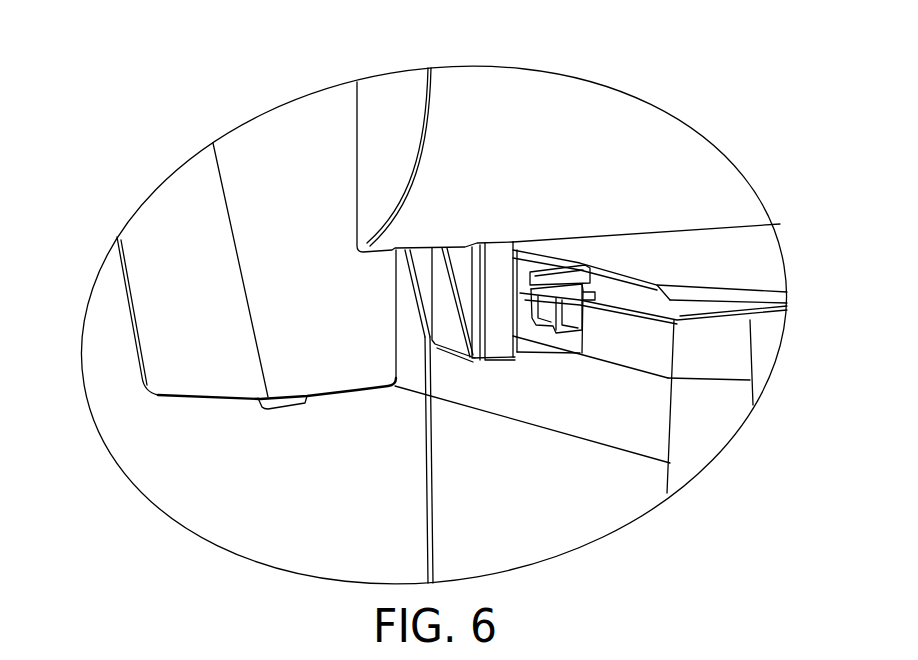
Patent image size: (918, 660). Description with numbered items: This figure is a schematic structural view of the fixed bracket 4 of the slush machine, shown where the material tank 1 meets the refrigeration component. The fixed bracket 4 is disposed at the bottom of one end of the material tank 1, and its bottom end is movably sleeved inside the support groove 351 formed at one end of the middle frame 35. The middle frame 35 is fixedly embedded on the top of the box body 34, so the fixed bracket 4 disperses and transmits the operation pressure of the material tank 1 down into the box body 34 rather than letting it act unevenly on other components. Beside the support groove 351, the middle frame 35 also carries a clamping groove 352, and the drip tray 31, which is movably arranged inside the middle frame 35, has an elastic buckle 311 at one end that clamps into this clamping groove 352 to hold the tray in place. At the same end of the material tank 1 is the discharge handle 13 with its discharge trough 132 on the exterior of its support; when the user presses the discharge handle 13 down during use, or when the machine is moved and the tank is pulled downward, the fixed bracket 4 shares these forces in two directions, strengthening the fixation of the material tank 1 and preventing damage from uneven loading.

The material tank 1 is at (535, 148).
The fixed bracket 4 is at (487, 300).
The discharge handle 13 is at (125, 302).
The discharge trough 132 is at (288, 273).
The drip tray 31 is at (738, 282).
The elastic buckle 311 is at (593, 282).
The box body 34 is at (422, 445).
The middle frame 35 is at (633, 345).
The support groove 351 is at (561, 338).
The clamping groove 352 is at (550, 300).